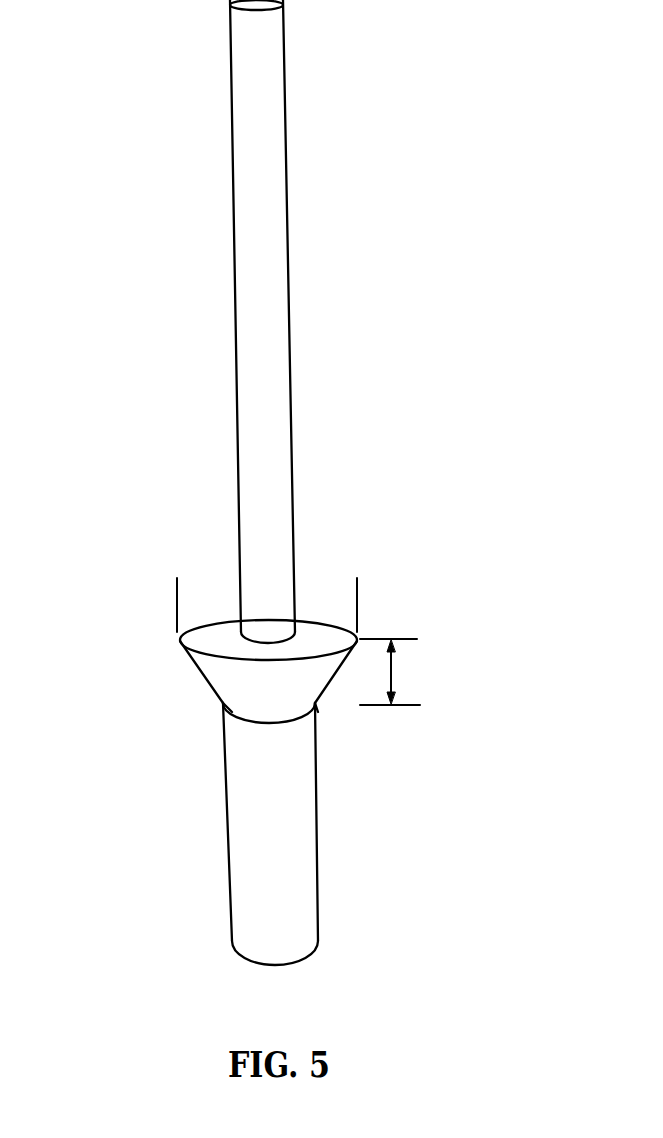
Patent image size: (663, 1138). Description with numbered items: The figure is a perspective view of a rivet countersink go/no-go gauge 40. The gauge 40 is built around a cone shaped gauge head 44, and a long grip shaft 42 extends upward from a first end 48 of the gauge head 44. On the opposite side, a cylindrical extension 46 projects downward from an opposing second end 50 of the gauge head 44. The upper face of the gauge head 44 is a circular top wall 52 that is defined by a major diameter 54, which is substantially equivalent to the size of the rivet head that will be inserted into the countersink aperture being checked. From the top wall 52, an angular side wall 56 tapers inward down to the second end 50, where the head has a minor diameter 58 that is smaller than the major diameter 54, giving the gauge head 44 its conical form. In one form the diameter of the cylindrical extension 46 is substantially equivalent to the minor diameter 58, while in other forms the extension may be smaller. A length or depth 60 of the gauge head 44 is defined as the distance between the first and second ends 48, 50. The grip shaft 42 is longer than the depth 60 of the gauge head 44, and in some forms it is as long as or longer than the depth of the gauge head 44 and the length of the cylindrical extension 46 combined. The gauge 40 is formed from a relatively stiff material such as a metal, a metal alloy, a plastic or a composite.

The countersink go/no-go gauge 40 is at (337, 367).
The grip shaft 42 is at (268, 212).
The gauge head 44 is at (321, 694).
The cylindrical extension 46 is at (297, 877).
The first end 48 is at (178, 641).
The second end 50 is at (275, 722).
The circular top wall 52 is at (305, 638).
The major diameter 54 is at (368, 607).
The angular side wall 56 is at (197, 665).
The minor diameter 58 is at (222, 702).
The depth of the gauge head 60 is at (393, 672).